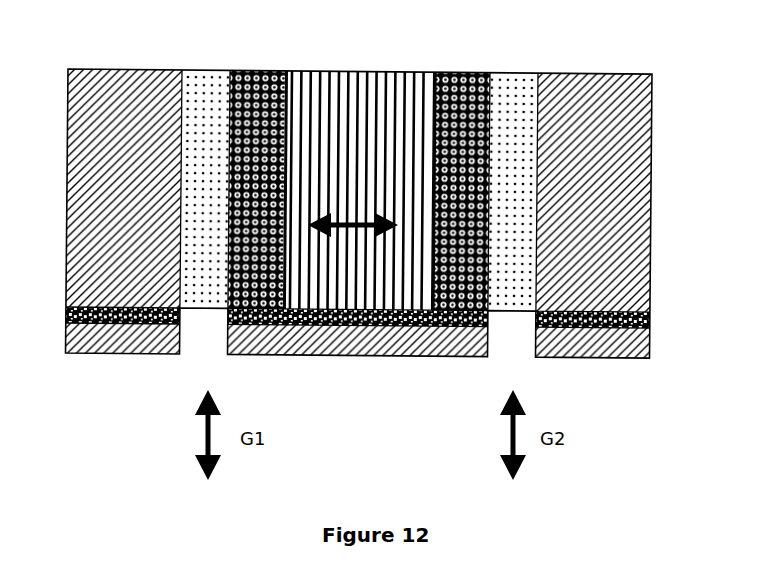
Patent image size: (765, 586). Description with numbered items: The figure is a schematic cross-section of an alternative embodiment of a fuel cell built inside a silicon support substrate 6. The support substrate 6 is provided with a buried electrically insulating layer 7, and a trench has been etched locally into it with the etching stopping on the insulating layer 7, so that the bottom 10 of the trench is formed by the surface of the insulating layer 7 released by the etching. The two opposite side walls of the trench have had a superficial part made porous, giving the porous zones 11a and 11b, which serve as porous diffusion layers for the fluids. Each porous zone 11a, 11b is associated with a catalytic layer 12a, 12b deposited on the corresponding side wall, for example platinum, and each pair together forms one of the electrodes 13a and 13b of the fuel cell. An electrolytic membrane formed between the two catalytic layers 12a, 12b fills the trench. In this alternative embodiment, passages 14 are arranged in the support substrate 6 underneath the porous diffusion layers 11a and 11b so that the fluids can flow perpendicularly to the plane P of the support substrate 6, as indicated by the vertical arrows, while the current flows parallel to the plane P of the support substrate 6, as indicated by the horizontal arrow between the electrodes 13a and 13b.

The silicon support substrate 6 is at (70, 242).
The buried electrically insulating layer 7 is at (650, 351).
The bottom 10 is at (415, 316).
The porous zone 11a is at (200, 106).
The porous zone 11b is at (514, 104).
The catalytic layer 12a is at (287, 98).
The catalytic layer 12b is at (435, 91).
The electrode 13a is at (285, 68).
The electrode 13b is at (537, 69).
The passages 14 is at (372, 107).
The plane of support substrate P is at (653, 75).